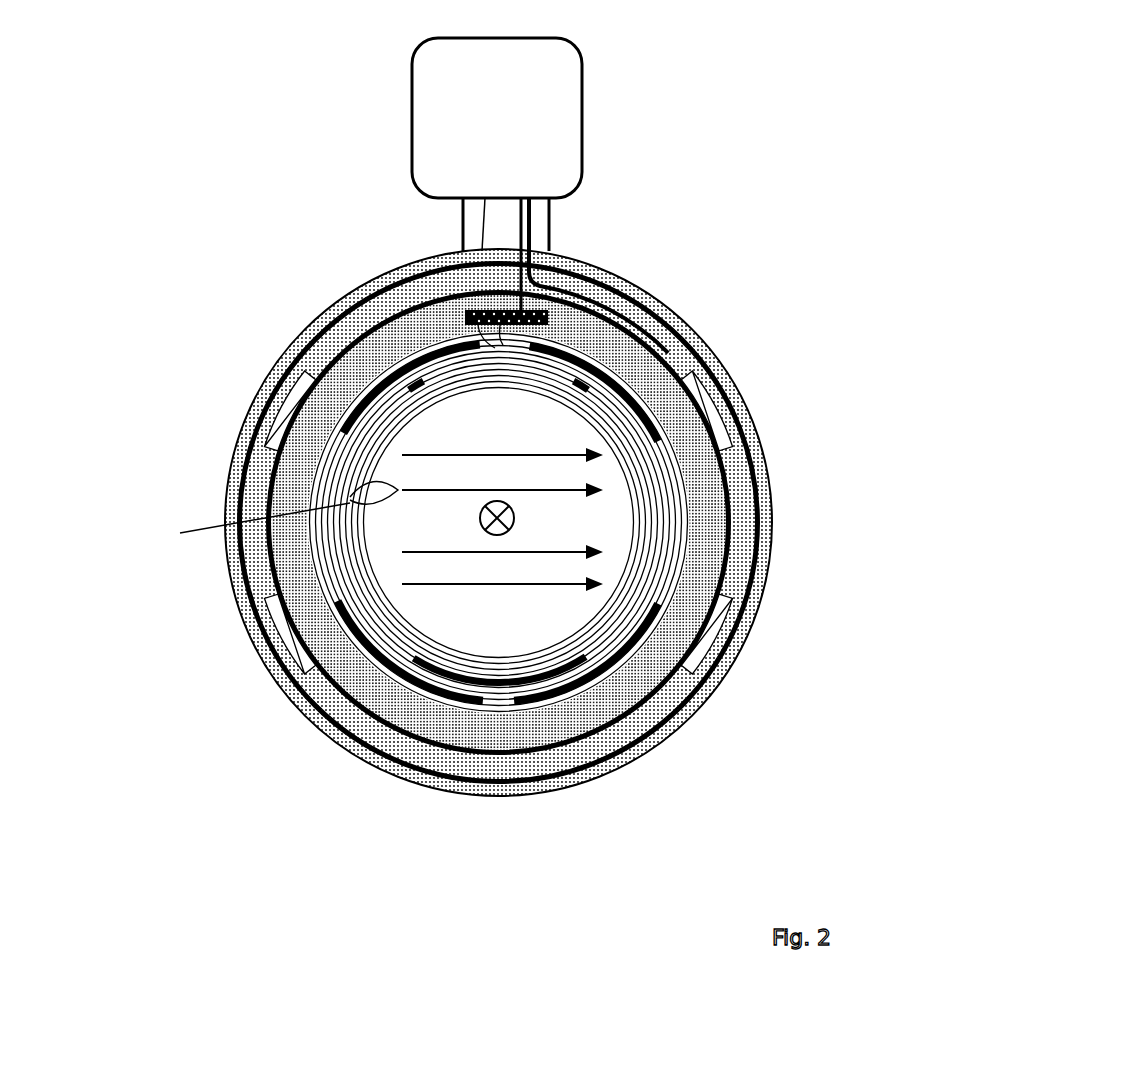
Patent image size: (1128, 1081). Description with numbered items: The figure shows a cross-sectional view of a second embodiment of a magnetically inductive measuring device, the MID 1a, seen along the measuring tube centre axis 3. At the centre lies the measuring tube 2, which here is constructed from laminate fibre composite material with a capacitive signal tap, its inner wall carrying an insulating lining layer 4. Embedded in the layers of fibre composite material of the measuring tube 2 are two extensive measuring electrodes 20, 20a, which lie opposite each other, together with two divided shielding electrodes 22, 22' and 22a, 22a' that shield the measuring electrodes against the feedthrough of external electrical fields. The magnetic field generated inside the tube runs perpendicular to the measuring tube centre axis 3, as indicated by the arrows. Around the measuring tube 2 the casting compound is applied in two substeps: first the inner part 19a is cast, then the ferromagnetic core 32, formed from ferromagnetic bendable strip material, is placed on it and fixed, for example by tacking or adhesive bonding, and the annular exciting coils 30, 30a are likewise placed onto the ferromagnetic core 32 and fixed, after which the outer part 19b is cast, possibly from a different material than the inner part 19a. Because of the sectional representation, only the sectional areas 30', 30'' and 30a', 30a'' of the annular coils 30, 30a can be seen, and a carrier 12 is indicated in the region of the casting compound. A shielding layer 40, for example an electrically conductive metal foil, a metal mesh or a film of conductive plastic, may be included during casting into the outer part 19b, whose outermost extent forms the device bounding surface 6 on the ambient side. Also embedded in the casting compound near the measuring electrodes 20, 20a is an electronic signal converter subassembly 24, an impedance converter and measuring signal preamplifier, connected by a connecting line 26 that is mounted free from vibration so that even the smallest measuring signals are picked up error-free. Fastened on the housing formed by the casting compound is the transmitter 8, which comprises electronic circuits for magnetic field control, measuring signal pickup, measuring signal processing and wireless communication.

The magnetically inductive measuring device (MID) 1a is at (485, 467).
The measuring tube 2 is at (340, 565).
The measuring tube centre axis 3 is at (480, 516).
The insulating lining layer 4 is at (274, 516).
The device bounding surface 6 is at (720, 683).
The transmitter 8 is at (570, 65).
The carrier 12 is at (283, 563).
The inner part of casting compound 19a is at (290, 463).
The outer part of casting compound 19b is at (443, 762).
The measuring electrode 20 is at (452, 672).
The measuring electrode 20a is at (433, 382).
The shielding electrode 22 is at (586, 652).
The shielding electrode 22' is at (395, 723).
The shielding electrode 22a is at (679, 382).
The shielding electrode 22a' is at (329, 344).
The electronic signal converter subassembly 24 is at (465, 313).
The connection line 26 is at (550, 227).
The annular exciting coil 30 is at (805, 411).
The sectional area of annular exciting coil 30' is at (706, 411).
The sectional area of annular exciting coil 30'' is at (794, 634).
The annular exciting coil 30a is at (210, 389).
The sectional area of annular exciting coil 30a' is at (290, 411).
The sectional area of annular exciting coil 30a'' is at (179, 670).
The ferromagnetic core 32 is at (773, 497).
The shielding layer 40 is at (667, 322).